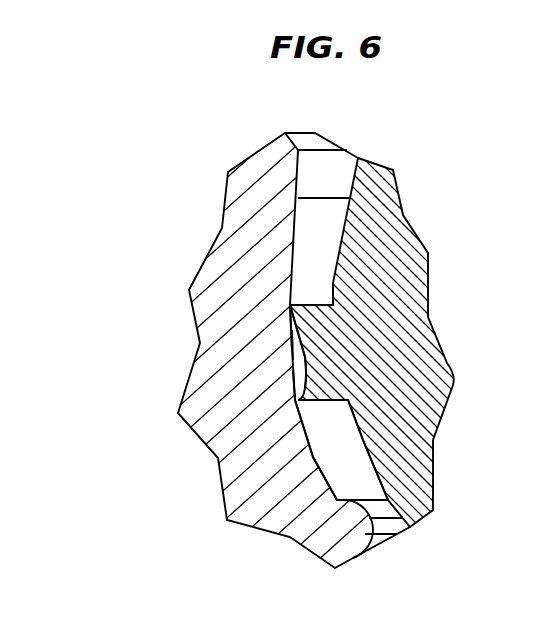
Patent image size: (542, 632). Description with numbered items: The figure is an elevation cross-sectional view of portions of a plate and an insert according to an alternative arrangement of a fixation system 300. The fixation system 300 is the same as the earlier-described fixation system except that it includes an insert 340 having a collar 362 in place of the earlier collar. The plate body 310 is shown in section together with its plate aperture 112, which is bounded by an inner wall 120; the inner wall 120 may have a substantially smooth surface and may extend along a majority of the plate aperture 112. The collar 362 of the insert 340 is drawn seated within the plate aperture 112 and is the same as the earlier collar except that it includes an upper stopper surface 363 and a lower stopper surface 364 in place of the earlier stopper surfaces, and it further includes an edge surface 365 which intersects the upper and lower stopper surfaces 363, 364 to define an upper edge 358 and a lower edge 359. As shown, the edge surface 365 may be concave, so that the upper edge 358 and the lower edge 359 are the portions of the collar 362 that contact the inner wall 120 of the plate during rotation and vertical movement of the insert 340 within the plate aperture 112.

The fixation system 300 is at (97, 177).
The closure body 310 is at (250, 152).
The insert 340 is at (338, 225).
The upper edge 358 is at (293, 315).
The edge surface 365 is at (293, 333).
The collar 362 is at (305, 354).
The lower edge 359 is at (302, 396).
The upper stopper surface 363 is at (310, 305).
The lower stopper surface 364 is at (328, 400).
The inner wall 120 is at (313, 457).
The plate aperture 112 is at (385, 530).